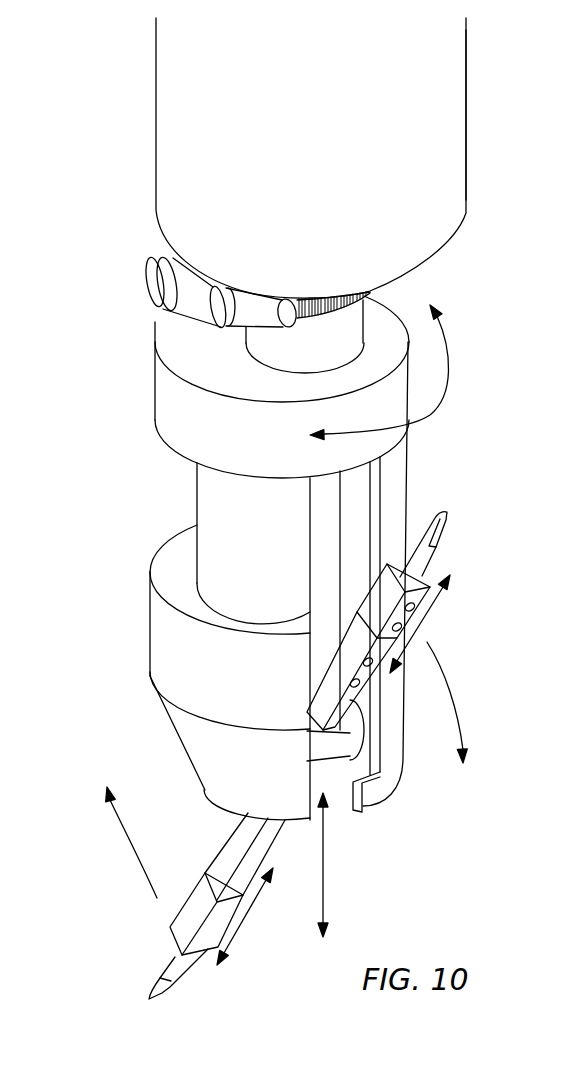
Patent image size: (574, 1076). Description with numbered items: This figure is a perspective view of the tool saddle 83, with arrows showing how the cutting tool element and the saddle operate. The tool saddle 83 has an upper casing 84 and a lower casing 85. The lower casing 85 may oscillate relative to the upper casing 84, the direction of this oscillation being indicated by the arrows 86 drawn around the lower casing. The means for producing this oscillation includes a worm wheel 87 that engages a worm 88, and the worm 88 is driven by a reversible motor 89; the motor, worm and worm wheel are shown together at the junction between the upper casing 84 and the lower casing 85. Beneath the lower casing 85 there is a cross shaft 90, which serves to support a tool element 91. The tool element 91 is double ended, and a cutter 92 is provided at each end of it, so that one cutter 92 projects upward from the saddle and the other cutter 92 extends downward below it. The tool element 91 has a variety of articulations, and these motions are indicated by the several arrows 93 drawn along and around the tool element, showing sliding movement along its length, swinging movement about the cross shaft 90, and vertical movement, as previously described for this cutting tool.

The tool saddle 83 is at (445, 163).
The upper casing 84 is at (452, 70).
The lower casing 85 is at (166, 421).
The arrows 86 is at (442, 374).
The worm wheel 87 is at (347, 308).
The worm 88 is at (263, 311).
The reversible motor 89 is at (160, 270).
The cross shaft 90 is at (350, 748).
The tool element 91 is at (338, 692).
The cutter 92 is at (446, 527).
The arrows 93 is at (428, 610).